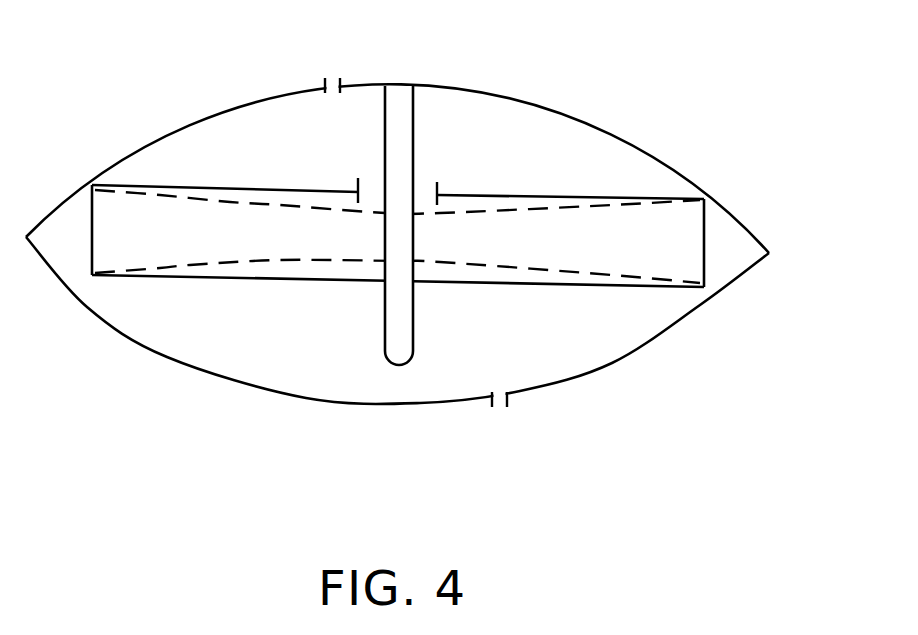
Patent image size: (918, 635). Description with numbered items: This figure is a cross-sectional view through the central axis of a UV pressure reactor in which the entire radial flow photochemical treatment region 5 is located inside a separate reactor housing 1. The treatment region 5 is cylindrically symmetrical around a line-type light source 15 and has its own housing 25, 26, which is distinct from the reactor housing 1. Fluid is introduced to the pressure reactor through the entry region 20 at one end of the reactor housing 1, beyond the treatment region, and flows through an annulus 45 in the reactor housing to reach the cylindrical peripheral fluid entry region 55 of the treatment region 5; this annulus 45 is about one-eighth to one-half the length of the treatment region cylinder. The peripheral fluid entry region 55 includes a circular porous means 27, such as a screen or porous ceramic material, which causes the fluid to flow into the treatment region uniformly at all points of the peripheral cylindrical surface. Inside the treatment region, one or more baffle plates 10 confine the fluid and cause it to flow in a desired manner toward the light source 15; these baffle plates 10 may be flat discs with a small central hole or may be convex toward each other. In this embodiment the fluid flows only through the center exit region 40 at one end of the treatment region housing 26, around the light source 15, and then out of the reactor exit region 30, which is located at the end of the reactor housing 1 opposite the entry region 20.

The reactor housing 1 is at (624, 137).
The photochemical treatment region 5 is at (118, 212).
The baffle plates 10 is at (473, 265).
The line-type light source 15 is at (402, 95).
The entry region 20 is at (515, 418).
The treatment region housing 25 is at (242, 280).
The treatment region housing 26 is at (252, 188).
The circular porous means 27 is at (720, 225).
The reactor exit region 30 is at (328, 78).
The center exit region 40 is at (377, 192).
The annulus 45 is at (608, 325).
The peripheral fluid entry region 55 is at (722, 284).